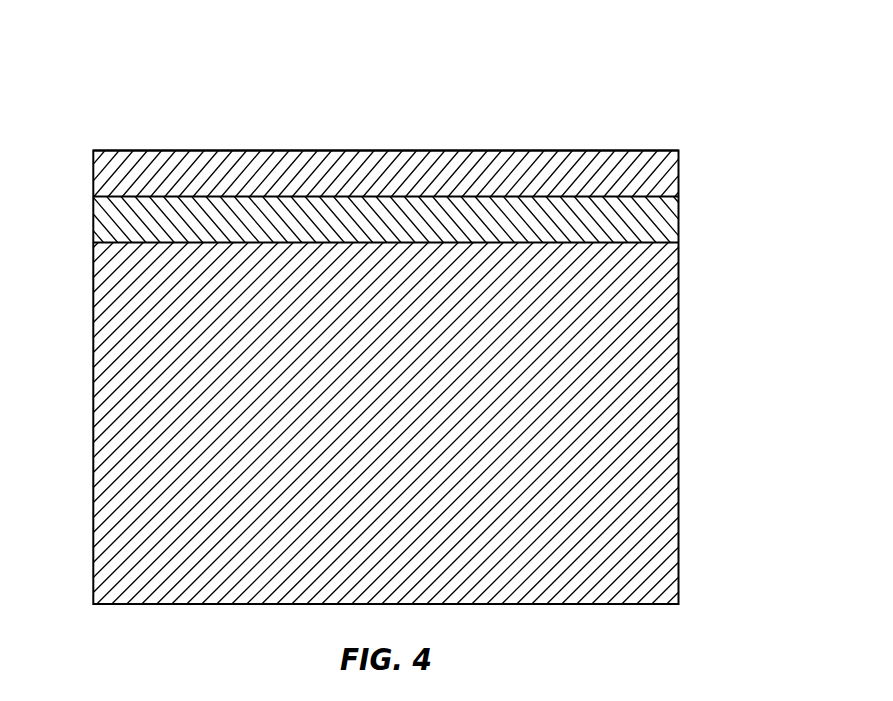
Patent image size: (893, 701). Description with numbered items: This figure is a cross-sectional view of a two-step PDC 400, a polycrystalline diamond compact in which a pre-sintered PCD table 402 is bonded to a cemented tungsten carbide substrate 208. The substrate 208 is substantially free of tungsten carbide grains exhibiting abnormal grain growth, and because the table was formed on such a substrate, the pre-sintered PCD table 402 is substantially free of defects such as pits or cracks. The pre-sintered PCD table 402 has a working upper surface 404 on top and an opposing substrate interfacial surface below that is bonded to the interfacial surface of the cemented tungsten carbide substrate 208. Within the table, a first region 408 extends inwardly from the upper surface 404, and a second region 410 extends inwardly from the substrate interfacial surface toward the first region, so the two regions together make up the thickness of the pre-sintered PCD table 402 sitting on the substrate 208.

The two-step PDC 400 is at (694, 96).
The pre-sintered PCD table 402 is at (384, 197).
The upper surface 404 is at (383, 150).
The first region 408 is at (685, 151).
The second region 410 is at (685, 197).
The cemented tungsten carbide substrate 208 is at (370, 432).